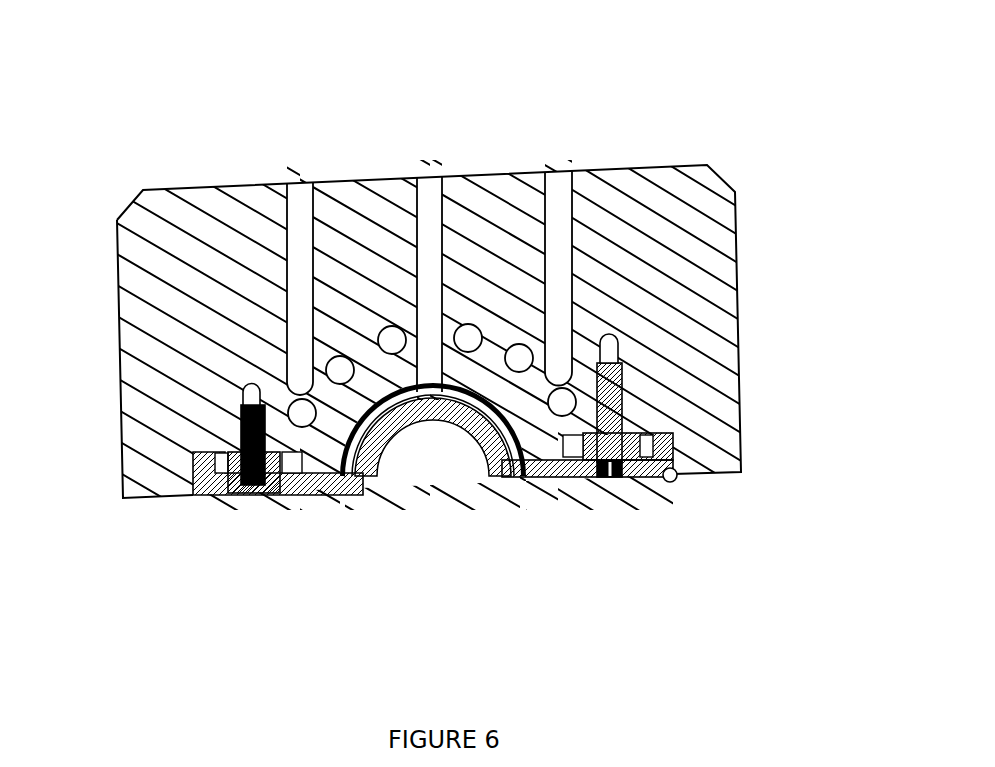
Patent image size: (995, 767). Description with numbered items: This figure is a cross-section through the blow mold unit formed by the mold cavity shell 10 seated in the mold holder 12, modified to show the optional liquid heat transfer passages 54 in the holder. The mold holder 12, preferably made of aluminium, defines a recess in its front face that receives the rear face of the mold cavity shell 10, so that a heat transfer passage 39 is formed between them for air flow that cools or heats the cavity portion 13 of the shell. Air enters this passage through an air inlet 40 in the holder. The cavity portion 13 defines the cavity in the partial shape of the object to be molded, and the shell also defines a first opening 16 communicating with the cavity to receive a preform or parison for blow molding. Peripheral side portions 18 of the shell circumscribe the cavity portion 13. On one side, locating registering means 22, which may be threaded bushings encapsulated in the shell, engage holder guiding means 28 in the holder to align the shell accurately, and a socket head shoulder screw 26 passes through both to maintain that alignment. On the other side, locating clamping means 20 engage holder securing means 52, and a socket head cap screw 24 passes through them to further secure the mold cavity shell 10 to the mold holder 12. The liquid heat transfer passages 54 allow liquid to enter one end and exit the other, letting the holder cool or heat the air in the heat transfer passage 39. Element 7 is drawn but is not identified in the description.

The mold holder 12 is at (655, 146).
The liquid heat transfer passage 54 is at (295, 215).
The air inlet 40 is at (423, 205).
The mold cavity shell 10 is at (423, 464).
The cavity portion 13 is at (365, 465).
The first opening 16 is at (462, 465).
The heat transfer passage 39 is at (420, 412).
The locating clamping means 20 is at (236, 496).
The socket head cap screw 24 is at (164, 490).
The holder securing means 52 is at (243, 397).
The peripheral side portion 18 is at (560, 478).
The locating registering means 22 is at (637, 478).
The socket head shoulder screw 26 is at (692, 435).
The holder guiding means 28 is at (617, 340).
The seal ring 7 is at (675, 478).